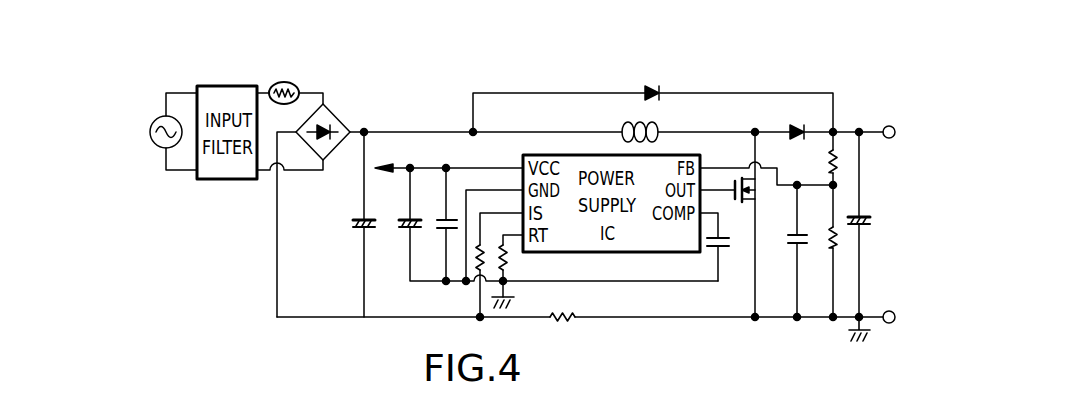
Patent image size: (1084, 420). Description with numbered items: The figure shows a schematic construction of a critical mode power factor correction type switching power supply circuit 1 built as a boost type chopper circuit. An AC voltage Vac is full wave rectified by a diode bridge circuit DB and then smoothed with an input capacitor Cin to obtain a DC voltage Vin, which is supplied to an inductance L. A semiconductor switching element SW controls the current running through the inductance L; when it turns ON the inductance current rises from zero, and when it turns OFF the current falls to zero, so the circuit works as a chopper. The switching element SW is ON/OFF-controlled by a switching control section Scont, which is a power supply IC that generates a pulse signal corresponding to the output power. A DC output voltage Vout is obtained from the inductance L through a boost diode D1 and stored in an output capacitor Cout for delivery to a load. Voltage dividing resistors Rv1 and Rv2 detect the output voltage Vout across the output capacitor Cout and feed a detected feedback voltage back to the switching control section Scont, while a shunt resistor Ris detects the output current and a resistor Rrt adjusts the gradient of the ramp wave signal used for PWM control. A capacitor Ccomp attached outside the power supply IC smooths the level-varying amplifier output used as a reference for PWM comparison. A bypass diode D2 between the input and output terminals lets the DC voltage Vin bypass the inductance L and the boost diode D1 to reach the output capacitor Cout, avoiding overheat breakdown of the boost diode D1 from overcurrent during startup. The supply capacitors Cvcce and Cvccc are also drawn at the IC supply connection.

The switching power supply circuit 1 is at (795, 102).
The AC voltage Vac is at (134, 108).
The diode bridge circuit DB is at (323, 121).
The DC voltage Vin is at (372, 119).
The input capacitor Cin is at (351, 223).
The bypass diode D2 is at (650, 88).
The inductance L is at (640, 121).
The switching control section Scont is at (522, 160).
The VCC electrolytic capacitor Cvcce is at (401, 222).
The VCC ceramic capacitor Cvccc is at (437, 224).
The resistor Rrt is at (516, 260).
The shunt resistor Ris is at (562, 303).
The semiconductor switching element SW is at (759, 199).
The capacitor Ccomp is at (729, 246).
The voltage dividing resistor Rv1 is at (817, 162).
The voltage dividing resistor Rv2 is at (820, 247).
The output capacitor Cout is at (872, 221).
The DC voltage Vout is at (878, 118).
The boost diode D1 is at (786, 142).